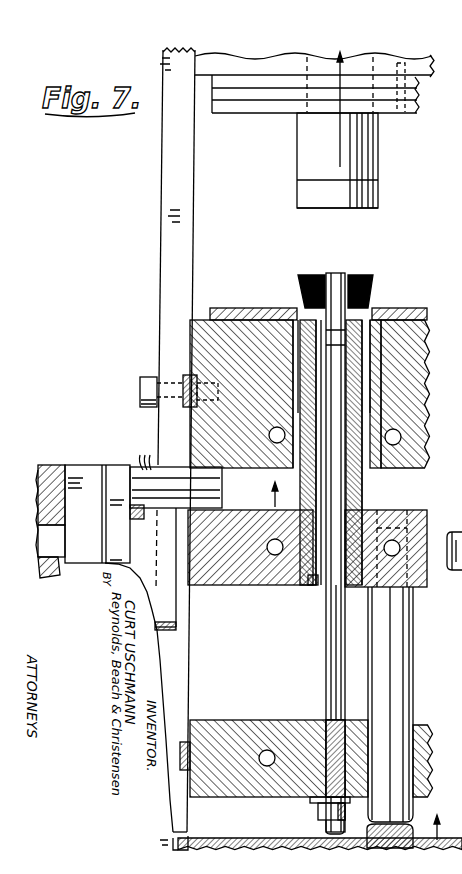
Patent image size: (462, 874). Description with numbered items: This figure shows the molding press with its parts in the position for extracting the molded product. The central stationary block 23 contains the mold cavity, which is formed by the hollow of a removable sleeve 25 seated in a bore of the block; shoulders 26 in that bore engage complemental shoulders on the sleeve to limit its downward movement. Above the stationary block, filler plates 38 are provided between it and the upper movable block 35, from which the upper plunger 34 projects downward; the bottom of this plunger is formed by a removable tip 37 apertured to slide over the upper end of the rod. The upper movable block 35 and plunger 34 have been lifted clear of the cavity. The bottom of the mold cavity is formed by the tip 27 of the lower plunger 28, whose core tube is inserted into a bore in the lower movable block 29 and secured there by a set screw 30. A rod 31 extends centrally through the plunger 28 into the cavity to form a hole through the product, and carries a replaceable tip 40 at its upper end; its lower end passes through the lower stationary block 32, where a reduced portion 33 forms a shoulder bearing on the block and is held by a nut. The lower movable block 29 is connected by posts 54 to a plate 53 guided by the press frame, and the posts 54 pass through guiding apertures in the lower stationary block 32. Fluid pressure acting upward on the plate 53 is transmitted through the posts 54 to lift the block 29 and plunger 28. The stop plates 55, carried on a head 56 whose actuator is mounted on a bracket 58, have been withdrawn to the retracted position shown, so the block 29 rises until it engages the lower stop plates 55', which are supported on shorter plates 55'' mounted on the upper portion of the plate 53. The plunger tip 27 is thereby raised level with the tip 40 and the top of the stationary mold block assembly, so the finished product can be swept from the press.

The upper movable block 35 is at (433, 72).
The filler plates 38 is at (420, 90).
The plunger 34 is at (379, 148).
The removable tip 37 is at (379, 193).
The replaceable tip 40 is at (305, 308).
The tip 27 is at (365, 318).
The removable sleeve 25 is at (380, 372).
The stationary block 23 is at (430, 400).
The bracket 58 is at (52, 468).
The head 56 is at (88, 470).
The lower stop plates 55' is at (138, 452).
The shorter plates 55'' is at (108, 513).
The stop plates 55 is at (176, 548).
The lower movable block 29 is at (243, 510).
The shoulders 26 is at (293, 460).
The plunger 28 is at (365, 490).
The set screws 30 is at (313, 585).
The rod 31 is at (326, 625).
The posts 54 is at (403, 686).
The lower stationary block 32 is at (258, 720).
The reduced portion 33 is at (330, 770).
The plate 53 is at (238, 838).